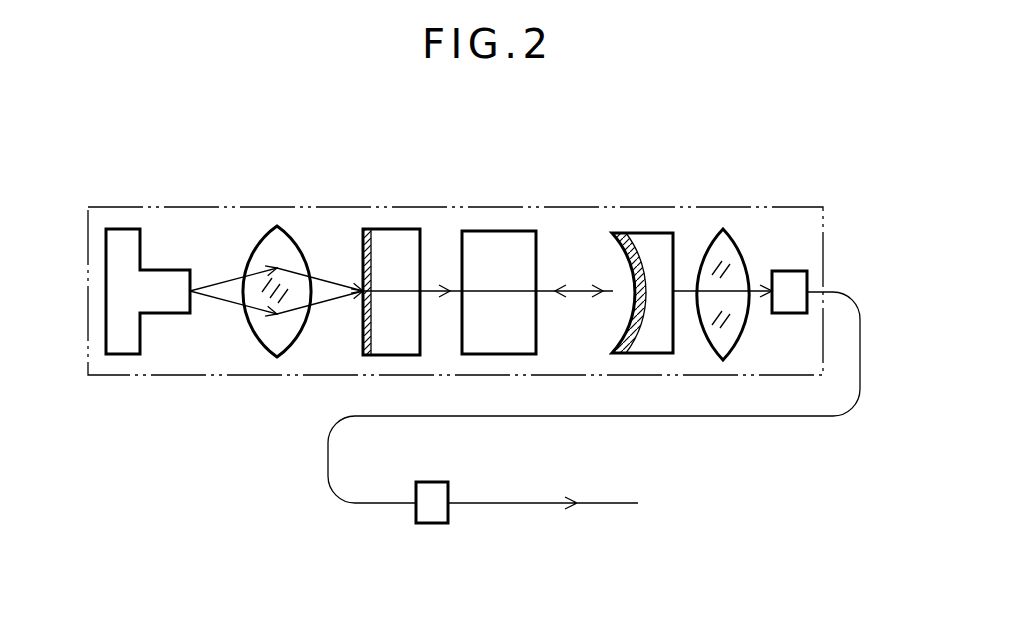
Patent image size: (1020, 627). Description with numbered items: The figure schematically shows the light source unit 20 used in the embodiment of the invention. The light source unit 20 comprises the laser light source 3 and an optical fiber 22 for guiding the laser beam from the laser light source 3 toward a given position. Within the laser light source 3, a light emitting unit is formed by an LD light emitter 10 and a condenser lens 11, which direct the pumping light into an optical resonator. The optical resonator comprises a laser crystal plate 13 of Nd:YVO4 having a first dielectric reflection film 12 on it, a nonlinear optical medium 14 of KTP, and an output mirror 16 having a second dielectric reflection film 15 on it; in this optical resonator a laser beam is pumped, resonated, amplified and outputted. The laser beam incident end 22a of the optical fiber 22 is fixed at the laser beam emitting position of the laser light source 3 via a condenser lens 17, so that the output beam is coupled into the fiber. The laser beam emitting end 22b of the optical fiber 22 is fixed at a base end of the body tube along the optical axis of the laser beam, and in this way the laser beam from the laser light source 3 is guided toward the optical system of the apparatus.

The laser light source 3 is at (305, 207).
The LD light emitter 10 is at (122, 355).
The condenser lens 11 is at (262, 350).
The first dielectric reflection film 12 is at (363, 352).
The laser crystal plate 13 is at (410, 356).
The nonlinear optical medium 14 is at (490, 231).
The second dielectric reflection film 15 is at (618, 233).
The output mirror 16 is at (660, 233).
The condenser lens 17 is at (738, 242).
The light source unit 20 is at (597, 188).
The optical fiber 22 is at (673, 416).
The laser beam incident end 22a is at (794, 271).
The laser beam emitting end 22b is at (433, 524).